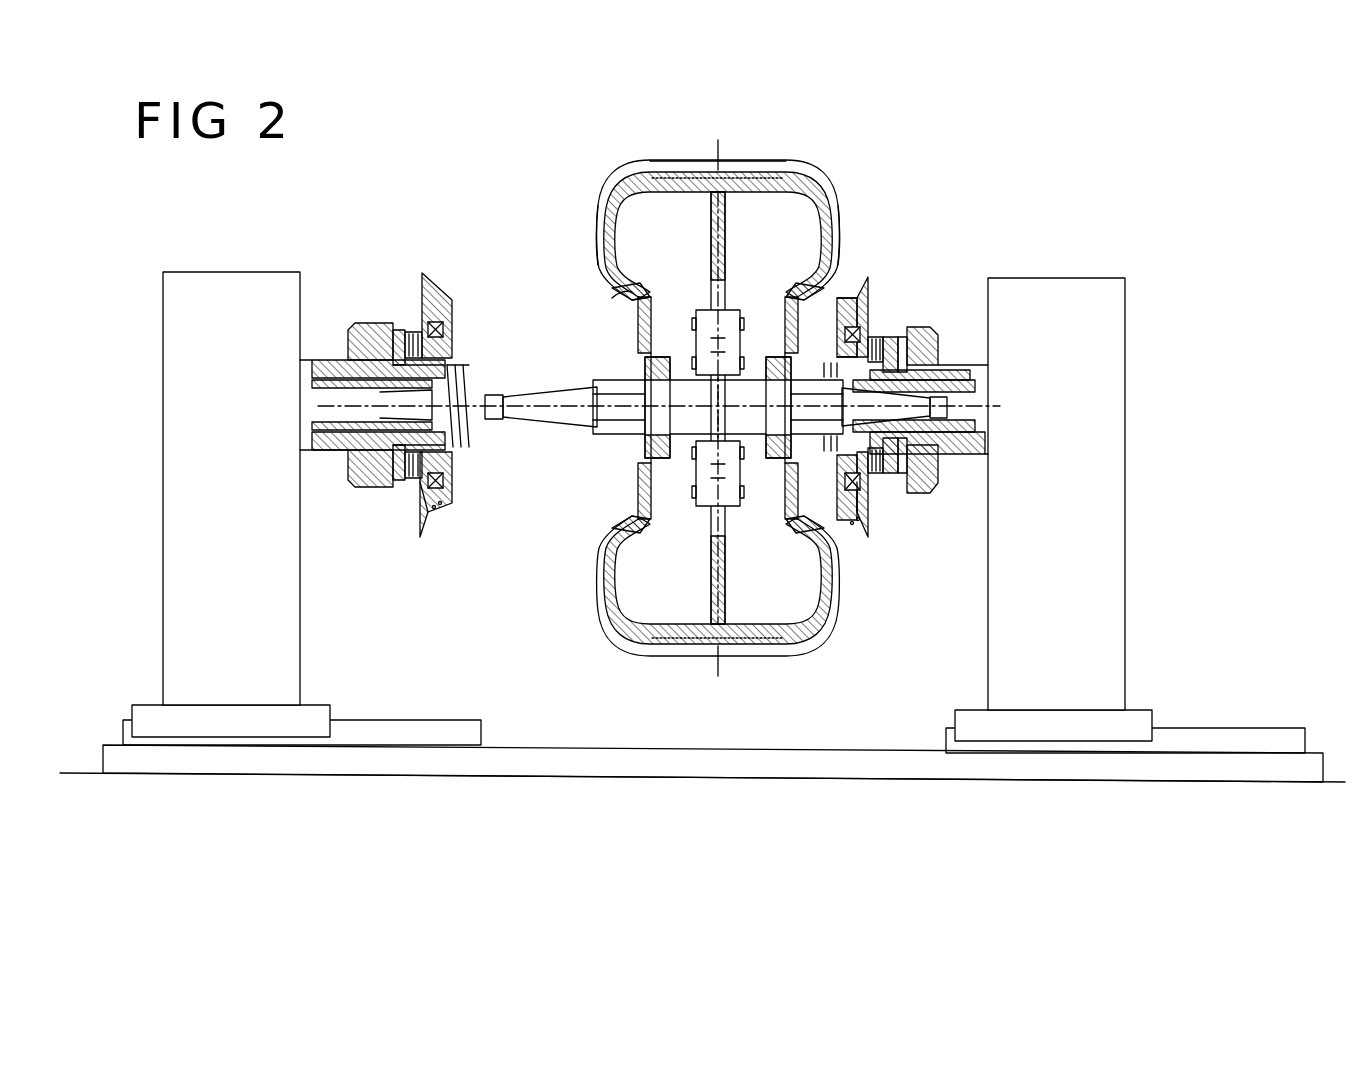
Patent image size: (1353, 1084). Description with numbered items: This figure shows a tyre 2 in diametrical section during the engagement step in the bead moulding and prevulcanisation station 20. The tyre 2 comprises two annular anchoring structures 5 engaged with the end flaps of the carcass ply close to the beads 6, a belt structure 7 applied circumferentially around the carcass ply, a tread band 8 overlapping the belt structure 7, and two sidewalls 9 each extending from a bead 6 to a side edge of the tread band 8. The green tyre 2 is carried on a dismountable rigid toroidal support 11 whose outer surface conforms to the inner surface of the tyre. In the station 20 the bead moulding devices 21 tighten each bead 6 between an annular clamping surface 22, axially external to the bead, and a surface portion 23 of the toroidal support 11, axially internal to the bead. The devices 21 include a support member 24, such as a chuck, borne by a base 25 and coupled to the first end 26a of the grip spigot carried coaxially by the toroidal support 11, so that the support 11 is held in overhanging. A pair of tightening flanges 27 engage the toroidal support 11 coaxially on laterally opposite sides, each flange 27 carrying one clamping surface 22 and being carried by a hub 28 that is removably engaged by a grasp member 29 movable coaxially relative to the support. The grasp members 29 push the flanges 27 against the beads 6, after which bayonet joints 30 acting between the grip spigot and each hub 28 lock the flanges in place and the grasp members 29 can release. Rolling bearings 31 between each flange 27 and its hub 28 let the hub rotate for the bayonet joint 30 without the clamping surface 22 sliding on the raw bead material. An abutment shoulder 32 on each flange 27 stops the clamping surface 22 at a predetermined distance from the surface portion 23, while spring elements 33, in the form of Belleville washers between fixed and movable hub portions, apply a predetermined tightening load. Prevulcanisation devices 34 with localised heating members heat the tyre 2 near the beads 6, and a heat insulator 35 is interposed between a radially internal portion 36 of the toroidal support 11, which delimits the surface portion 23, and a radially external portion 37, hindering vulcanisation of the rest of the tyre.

The tyre 2 is at (836, 160).
The annular anchoring structures 5 is at (619, 297).
The beads 6 is at (612, 298).
The belt structure 7 is at (703, 172).
The tread band 8 is at (656, 165).
The sidewalls 9 is at (598, 210).
The toroidal support 11 is at (771, 185).
The bead moulding and prevulcanisation station 20 is at (944, 176).
The bead moulding devices 21 is at (884, 253).
The annular clamping surface 22 is at (430, 276).
The surface portion 23 is at (633, 300).
The support member 24 is at (975, 431).
The base 25 is at (1115, 417).
The first end of grip spigot 26a is at (932, 374).
The tightening flanges 27 is at (452, 498).
The hub 28 is at (432, 458).
The grasp member 29 is at (362, 325).
The bayonet joints 30 is at (445, 375).
The rolling bearings 31 is at (450, 318).
The abutment shoulder 32 is at (452, 488).
The spring elements 33 is at (413, 337).
The prevulcanisation devices 34 is at (442, 516).
The heat insulator 35 is at (629, 542).
The radially internal portion 36 is at (641, 534).
The radially external portion 37 is at (611, 580).